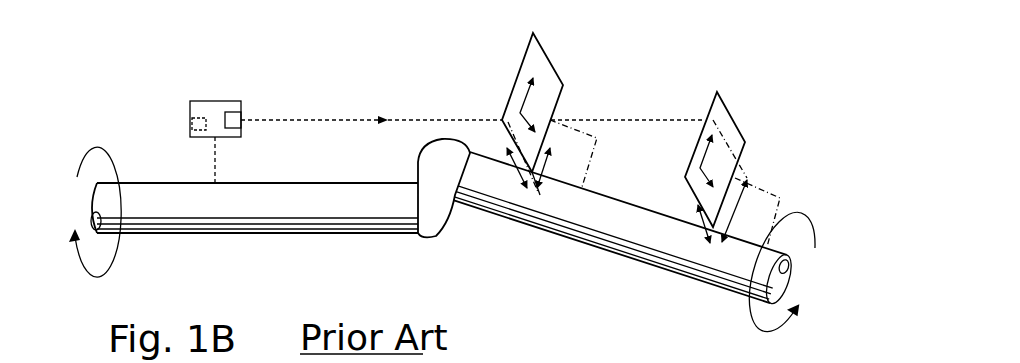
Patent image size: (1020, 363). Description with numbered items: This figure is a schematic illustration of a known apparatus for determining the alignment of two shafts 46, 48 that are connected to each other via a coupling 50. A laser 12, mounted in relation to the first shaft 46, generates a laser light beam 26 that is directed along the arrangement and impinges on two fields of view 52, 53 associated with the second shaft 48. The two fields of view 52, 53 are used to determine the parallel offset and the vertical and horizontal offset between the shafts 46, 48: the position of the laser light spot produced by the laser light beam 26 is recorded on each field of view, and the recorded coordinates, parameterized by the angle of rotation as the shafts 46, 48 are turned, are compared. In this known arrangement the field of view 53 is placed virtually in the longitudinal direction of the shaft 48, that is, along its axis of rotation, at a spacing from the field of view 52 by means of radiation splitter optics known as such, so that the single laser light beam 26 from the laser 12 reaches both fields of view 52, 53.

The laser 12 is at (196, 126).
The laser light beam 26 is at (328, 120).
The shaft 46 is at (277, 202).
The shaft 48 is at (620, 220).
The coupling 50 is at (447, 222).
The field of view 52 is at (528, 62).
The field of view 53 is at (714, 92).